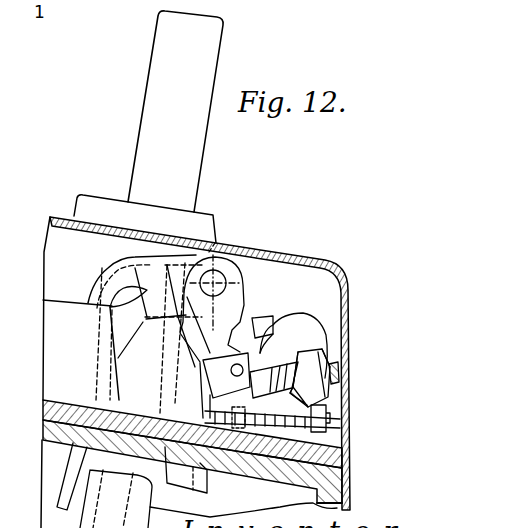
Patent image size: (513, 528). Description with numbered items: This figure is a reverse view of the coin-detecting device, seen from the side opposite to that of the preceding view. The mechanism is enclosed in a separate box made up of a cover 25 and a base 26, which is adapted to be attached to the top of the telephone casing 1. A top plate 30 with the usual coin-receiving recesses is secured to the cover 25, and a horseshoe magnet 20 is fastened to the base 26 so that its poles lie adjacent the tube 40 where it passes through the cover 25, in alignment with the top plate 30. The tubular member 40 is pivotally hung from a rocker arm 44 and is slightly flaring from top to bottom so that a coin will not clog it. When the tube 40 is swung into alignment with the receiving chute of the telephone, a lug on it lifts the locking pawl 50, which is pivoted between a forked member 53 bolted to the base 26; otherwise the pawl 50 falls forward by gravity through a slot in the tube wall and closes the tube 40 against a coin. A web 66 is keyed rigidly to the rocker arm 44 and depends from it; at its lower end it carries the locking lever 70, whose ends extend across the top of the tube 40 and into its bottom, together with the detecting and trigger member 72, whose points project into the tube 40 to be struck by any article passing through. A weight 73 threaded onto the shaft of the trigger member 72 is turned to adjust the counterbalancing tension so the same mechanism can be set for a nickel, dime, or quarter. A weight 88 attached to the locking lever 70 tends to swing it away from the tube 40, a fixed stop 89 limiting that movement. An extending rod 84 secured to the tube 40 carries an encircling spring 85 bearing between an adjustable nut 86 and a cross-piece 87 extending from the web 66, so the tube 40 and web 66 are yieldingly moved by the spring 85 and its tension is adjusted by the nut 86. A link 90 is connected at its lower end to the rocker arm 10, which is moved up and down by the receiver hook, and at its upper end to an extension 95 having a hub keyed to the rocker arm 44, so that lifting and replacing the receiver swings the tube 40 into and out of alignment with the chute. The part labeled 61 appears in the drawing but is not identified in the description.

The telephone casing 1 is at (337, 510).
The rocker arm 10 is at (5, 313).
The horseshoe magnet 20 is at (48, 374).
The cover 25 is at (350, 284).
The base 26 is at (45, 408).
The top plate 30 is at (210, 52).
The tubular member 40 is at (163, 373).
The rocker arm 44 is at (226, 289).
The locking pawl 50 is at (120, 262).
The forked member 53 is at (6, 350).
The link 61 is at (133, 6).
The web 66 is at (230, 330).
The locking lever 70 is at (243, 267).
The detecting and trigger member 72 is at (340, 377).
The weight 73 is at (326, 360).
The extending rod 84 is at (330, 420).
The encircling spring 85 is at (263, 455).
The adjustable nut 86 is at (338, 442).
The cross-piece 87 is at (239, 408).
The weight 88 is at (313, 325).
The fixed stop 89 is at (283, 315).
The link 90 is at (60, 503).
The extension 95 is at (167, 258).